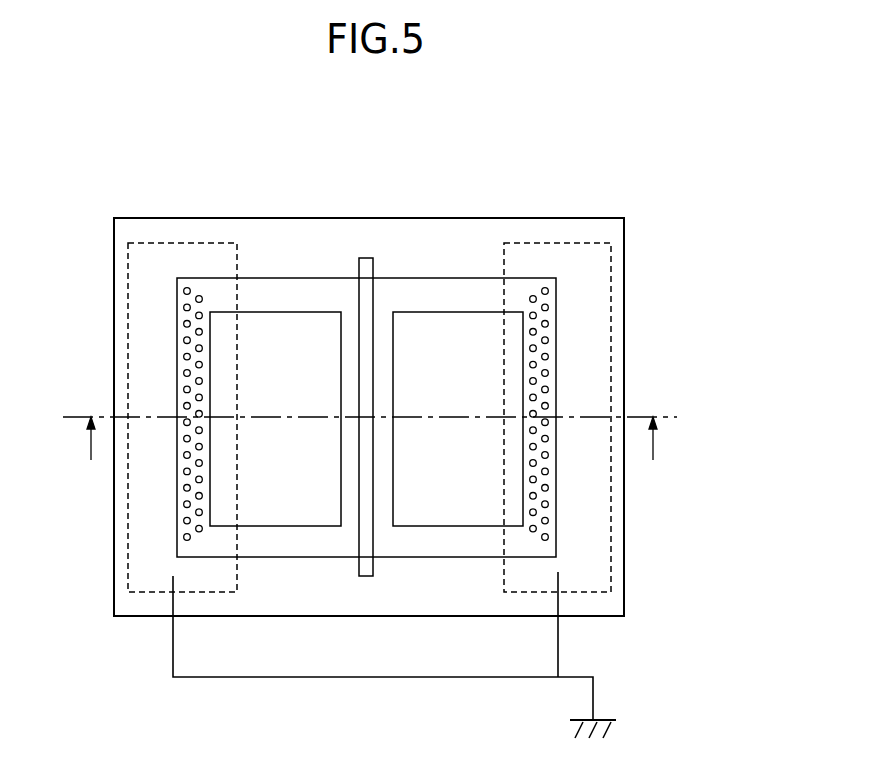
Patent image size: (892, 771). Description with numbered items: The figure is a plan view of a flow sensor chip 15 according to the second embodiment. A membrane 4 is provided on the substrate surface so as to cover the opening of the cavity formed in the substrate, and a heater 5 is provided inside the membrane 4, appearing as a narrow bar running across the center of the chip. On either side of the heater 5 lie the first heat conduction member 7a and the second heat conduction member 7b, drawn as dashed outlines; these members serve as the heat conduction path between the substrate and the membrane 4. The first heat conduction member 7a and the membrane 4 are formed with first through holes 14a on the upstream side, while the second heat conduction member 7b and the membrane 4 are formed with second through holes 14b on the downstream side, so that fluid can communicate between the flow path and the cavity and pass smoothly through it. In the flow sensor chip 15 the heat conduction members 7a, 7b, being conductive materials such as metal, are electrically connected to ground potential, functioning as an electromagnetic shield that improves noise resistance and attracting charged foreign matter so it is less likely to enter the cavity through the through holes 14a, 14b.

The flow sensor chip 15 is at (630, 177).
The membrane 4 is at (611, 310).
The heater 5 is at (367, 258).
The first heat conduction member 7a is at (172, 243).
The second heat conduction member 7b is at (568, 243).
The first through holes 14a is at (184, 404).
The second through holes 14b is at (529, 398).